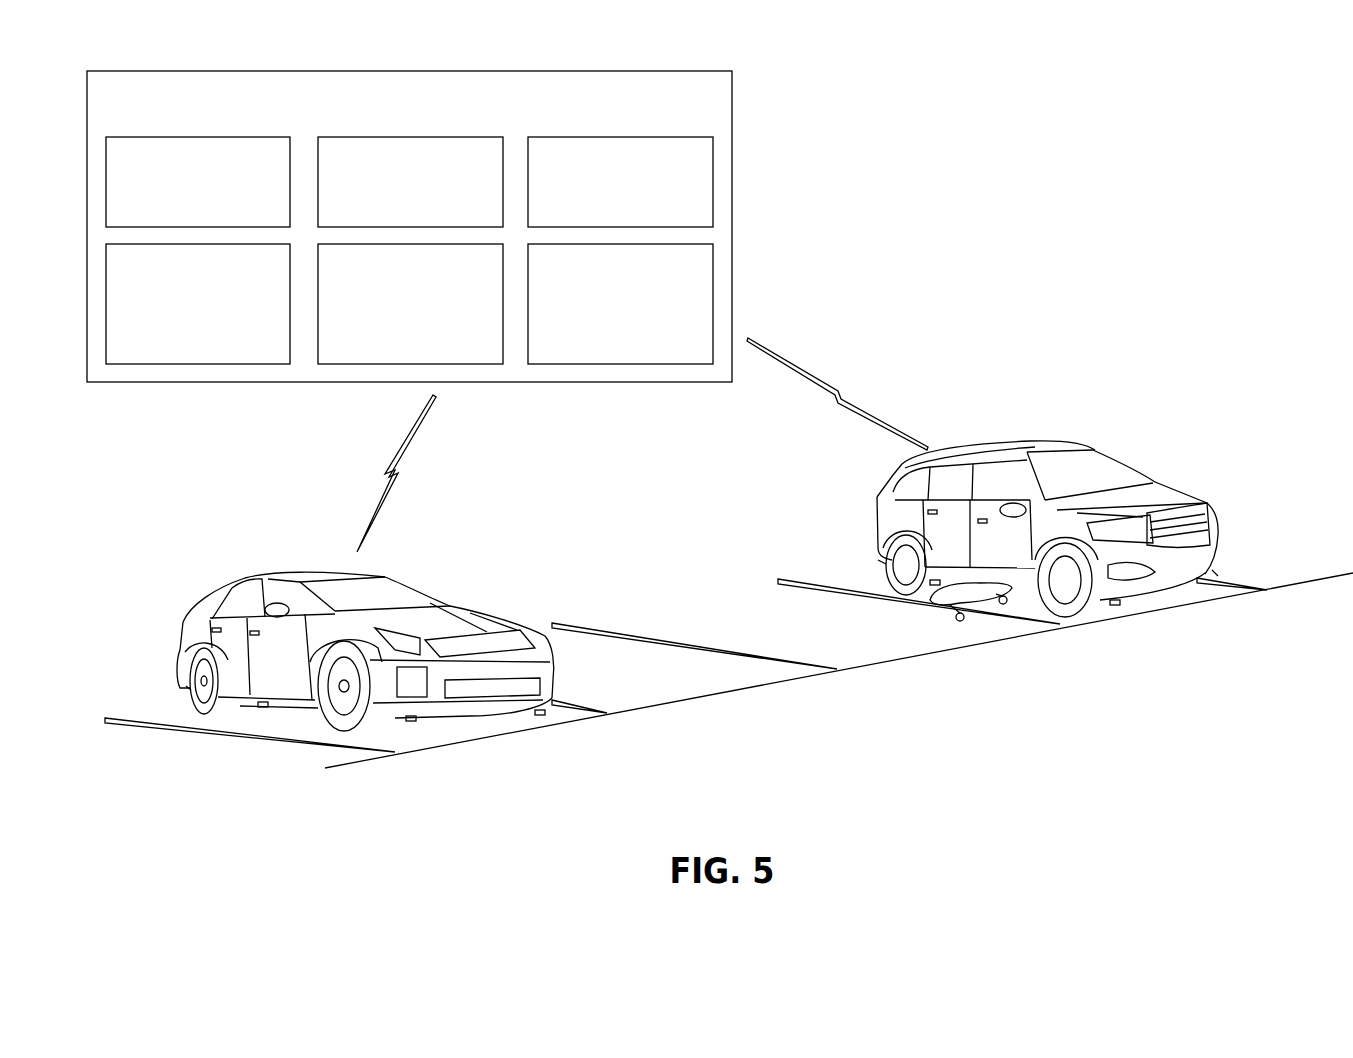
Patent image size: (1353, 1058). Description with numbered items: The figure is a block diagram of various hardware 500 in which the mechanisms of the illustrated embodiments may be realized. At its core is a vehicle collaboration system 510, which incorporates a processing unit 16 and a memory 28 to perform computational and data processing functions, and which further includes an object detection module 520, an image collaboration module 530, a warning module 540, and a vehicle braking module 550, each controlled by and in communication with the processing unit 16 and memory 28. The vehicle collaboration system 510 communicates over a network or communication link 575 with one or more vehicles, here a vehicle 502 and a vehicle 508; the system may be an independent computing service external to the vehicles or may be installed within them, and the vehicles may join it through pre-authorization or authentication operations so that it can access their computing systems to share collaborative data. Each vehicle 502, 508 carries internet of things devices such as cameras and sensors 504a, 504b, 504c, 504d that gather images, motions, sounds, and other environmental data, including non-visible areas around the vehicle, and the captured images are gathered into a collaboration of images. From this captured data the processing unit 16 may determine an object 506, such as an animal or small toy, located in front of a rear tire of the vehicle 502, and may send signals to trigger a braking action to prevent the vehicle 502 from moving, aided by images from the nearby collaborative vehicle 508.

The hardware 500 is at (1212, 134).
The vehicle collaboration system 510 is at (393, 126).
The processing unit 16 is at (187, 194).
The memory 28 is at (400, 194).
The object detection module 520 is at (603, 220).
The image collaboration module 530 is at (181, 356).
The warning module 540 is at (394, 328).
The vehicle braking module 550 is at (603, 328).
The communication link 575 is at (410, 440).
The vehicle 502 is at (1003, 447).
The vehicle 508 is at (350, 572).
The IoT device 504a is at (190, 690).
The IoT device 504b is at (260, 705).
The IoT device 504c is at (412, 721).
The IoT device 504d is at (540, 714).
The object 506 is at (943, 615).